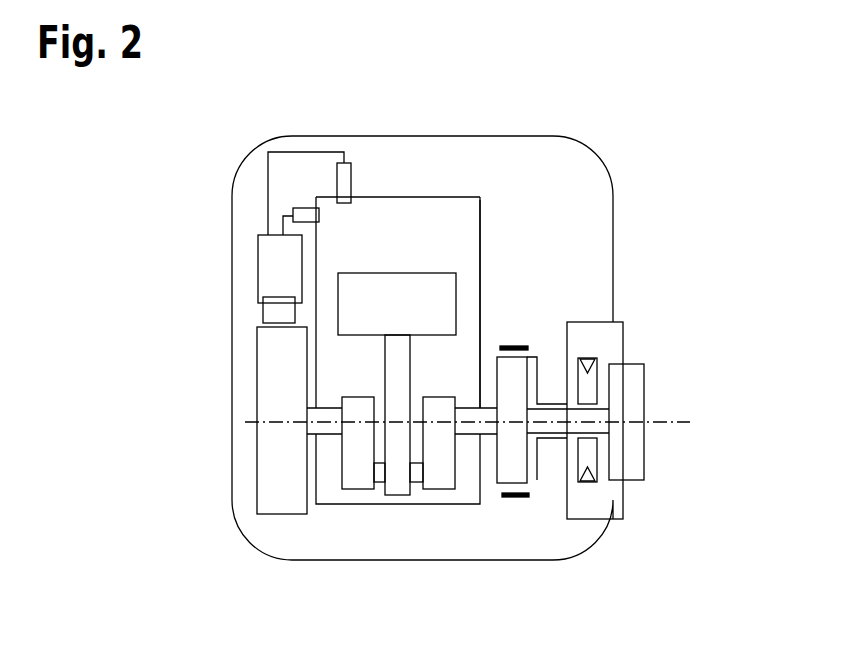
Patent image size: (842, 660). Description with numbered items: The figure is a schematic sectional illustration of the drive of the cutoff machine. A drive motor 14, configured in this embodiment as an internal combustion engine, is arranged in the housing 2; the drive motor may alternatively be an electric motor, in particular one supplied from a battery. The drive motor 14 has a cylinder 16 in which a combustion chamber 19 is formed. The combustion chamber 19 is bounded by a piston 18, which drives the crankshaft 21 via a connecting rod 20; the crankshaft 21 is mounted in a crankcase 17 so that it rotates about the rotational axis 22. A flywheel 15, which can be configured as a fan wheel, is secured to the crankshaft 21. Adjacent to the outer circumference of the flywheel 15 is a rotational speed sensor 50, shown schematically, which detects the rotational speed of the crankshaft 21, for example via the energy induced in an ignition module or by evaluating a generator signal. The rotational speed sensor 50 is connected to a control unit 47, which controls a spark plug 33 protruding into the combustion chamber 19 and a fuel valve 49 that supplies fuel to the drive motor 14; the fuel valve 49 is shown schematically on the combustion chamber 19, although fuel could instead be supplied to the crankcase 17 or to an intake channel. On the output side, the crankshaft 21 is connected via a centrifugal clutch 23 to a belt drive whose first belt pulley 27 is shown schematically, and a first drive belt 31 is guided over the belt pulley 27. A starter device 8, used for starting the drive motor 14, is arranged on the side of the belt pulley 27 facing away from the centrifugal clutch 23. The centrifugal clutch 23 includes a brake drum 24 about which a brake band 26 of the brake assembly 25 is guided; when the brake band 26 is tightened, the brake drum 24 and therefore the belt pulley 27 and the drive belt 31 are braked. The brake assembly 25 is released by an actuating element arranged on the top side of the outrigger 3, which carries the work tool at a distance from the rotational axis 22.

The housing 2 is at (613, 198).
The outrigger 3 is at (623, 340).
The starter device 8 is at (643, 380).
The drive motor 14 is at (427, 331).
The flywheel 15 is at (268, 488).
The cylinder 16 is at (481, 236).
The crankcase 17 is at (334, 504).
The piston 18 is at (402, 283).
The combustion chamber 19 is at (428, 228).
The connecting rod 20 is at (395, 457).
The crankshaft 21 is at (482, 430).
The rotational axis 22 is at (435, 424).
The centrifugal clutch 23 is at (535, 478).
The brake drum 24 is at (538, 358).
The brake assembly 25 is at (523, 498).
The brake band 26 is at (517, 343).
The first belt pulley 27 is at (588, 452).
The first drive belt 31 is at (592, 480).
The spark plug 33 is at (345, 178).
The control unit 47 is at (263, 248).
The fuel valve 49 is at (302, 210).
The rotational speed sensor 50 is at (263, 308).